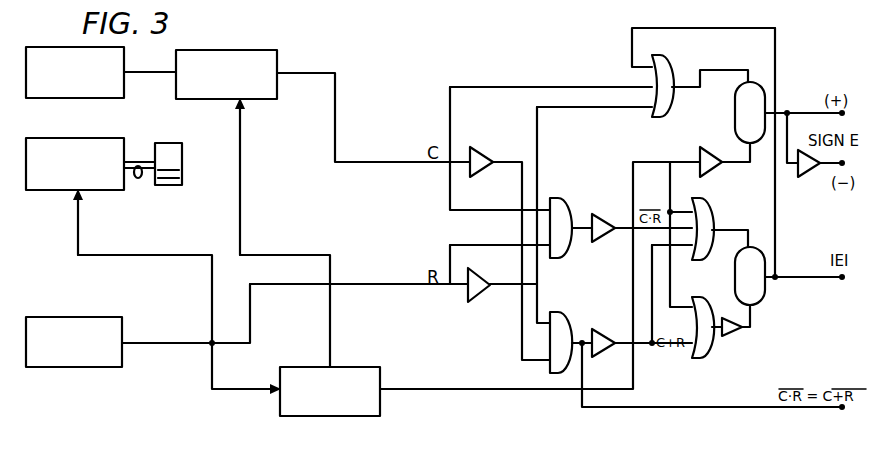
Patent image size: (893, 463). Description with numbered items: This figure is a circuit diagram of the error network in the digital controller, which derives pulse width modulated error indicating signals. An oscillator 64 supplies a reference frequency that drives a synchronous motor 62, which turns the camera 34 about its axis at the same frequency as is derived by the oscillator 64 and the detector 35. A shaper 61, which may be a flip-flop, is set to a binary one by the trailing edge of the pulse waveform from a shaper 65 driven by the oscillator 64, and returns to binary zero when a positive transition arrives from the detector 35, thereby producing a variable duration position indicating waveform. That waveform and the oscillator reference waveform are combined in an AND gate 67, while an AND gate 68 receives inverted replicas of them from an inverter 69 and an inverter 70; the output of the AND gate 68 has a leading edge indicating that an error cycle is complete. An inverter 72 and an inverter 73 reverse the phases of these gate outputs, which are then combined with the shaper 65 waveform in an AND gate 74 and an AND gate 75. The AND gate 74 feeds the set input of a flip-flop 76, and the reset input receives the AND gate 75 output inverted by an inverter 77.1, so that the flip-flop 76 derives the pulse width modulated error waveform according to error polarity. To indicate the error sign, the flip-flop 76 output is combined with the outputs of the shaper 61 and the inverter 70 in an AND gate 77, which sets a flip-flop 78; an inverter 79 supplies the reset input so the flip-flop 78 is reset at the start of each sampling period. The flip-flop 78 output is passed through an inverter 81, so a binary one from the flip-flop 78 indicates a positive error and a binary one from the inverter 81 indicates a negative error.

The detector 35 is at (45, 47).
The shaper 61 is at (235, 50).
The synchronous motor 62 is at (85, 138).
The camera 34 is at (182, 152).
The oscillator 64 is at (106, 317).
The shaper 65 is at (301, 416).
The inverter 69 is at (483, 158).
The inverter 70 is at (479, 300).
The AND gate 67 is at (574, 180).
The AND gate 68 is at (566, 312).
The inverter 72 is at (598, 242).
The inverter 73 is at (598, 332).
The AND gate 77 is at (665, 62).
The flip-flop 78 is at (757, 82).
The inverter 79 is at (711, 147).
The AND gate 74 is at (712, 206).
The AND gate 75 is at (710, 355).
The flip-flop 76 is at (766, 300).
The inverter 77.1 is at (745, 335).
The inverter 81 is at (808, 178).